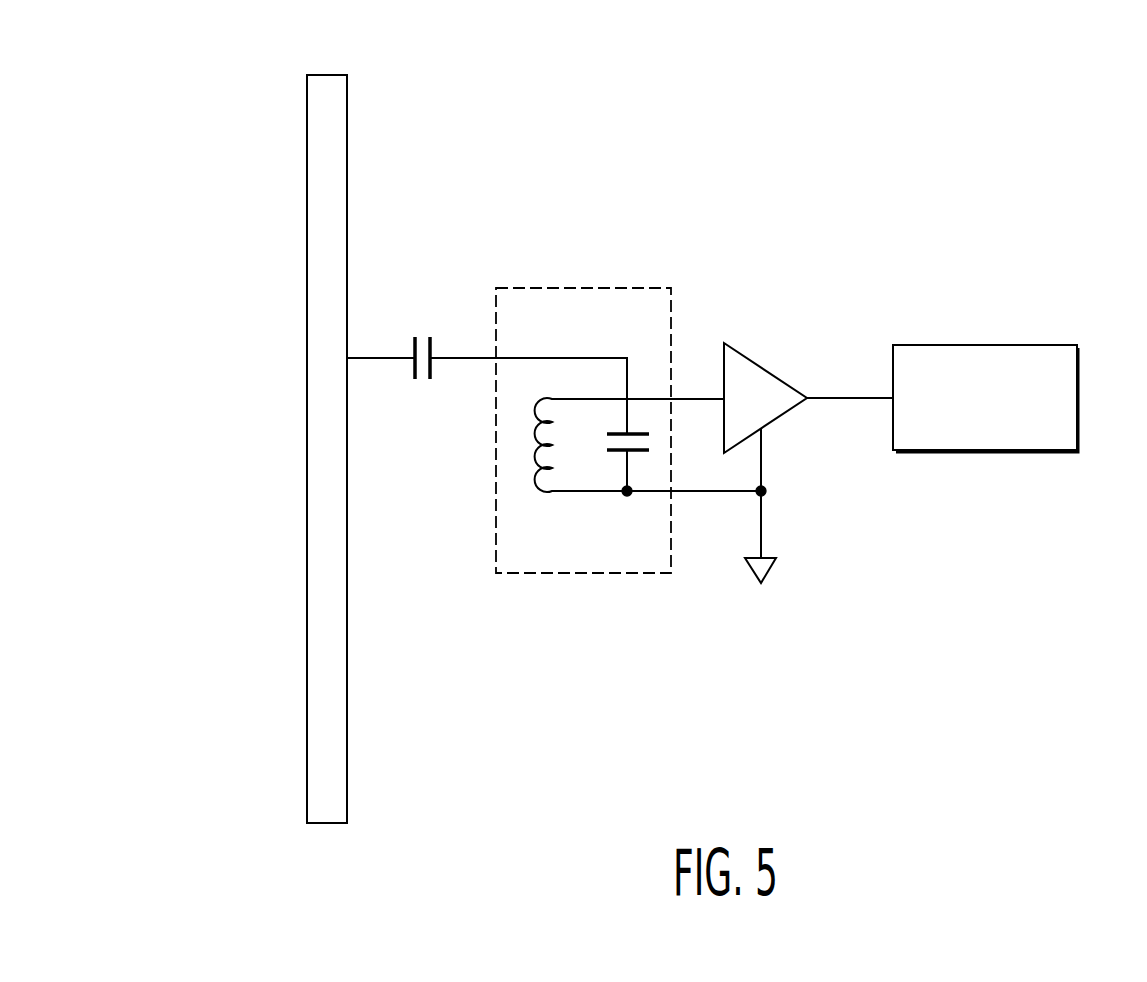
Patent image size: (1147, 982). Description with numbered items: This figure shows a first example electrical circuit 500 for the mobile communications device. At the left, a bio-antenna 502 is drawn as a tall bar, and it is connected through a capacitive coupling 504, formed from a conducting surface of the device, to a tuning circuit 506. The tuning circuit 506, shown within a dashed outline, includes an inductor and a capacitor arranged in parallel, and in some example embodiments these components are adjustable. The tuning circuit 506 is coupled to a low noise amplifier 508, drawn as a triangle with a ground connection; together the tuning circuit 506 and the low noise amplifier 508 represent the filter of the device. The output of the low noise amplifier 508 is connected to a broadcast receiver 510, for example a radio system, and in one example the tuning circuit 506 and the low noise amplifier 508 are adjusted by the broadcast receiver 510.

The electrical circuit 500 is at (168, 113).
The bio-antenna 502 is at (347, 148).
The capacitive coupling 504 is at (430, 342).
The tuning circuit 506 is at (638, 287).
The low noise amplifier 508 is at (757, 363).
The broadcast receiver 510 is at (998, 345).